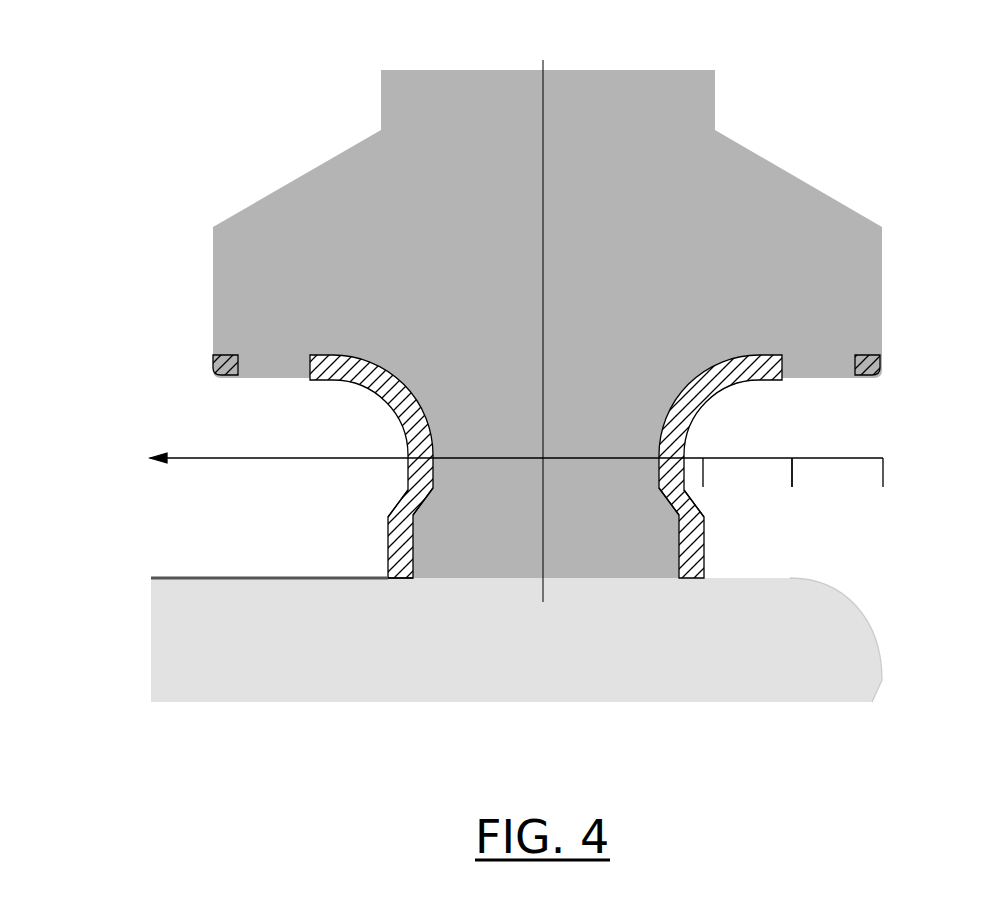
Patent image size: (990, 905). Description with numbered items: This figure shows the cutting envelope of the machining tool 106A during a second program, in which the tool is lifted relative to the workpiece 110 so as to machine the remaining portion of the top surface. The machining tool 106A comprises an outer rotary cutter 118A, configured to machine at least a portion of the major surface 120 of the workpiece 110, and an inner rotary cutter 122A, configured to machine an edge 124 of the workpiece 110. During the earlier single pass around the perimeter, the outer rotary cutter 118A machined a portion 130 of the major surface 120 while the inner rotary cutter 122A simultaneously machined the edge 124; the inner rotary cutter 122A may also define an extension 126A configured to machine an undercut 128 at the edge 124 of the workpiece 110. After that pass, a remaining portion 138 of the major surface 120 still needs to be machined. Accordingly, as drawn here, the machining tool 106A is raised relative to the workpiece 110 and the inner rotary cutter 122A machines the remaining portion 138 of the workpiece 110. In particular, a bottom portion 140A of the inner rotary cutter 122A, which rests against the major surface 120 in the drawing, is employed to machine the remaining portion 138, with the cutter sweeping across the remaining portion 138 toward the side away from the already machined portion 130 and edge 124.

The machining tool 106A is at (272, 138).
The outer rotary cutter 118A is at (214, 353).
The inner rotary cutter 122A is at (417, 423).
The extension 126A is at (400, 497).
The remaining portion 138 is at (260, 458).
The portion of the major surface 130 is at (748, 458).
The edge 124 is at (833, 458).
The major surface 120 is at (265, 575).
The workpiece 110 is at (705, 653).
The bottom portion 140A is at (407, 580).
The undercut 128 is at (873, 697).